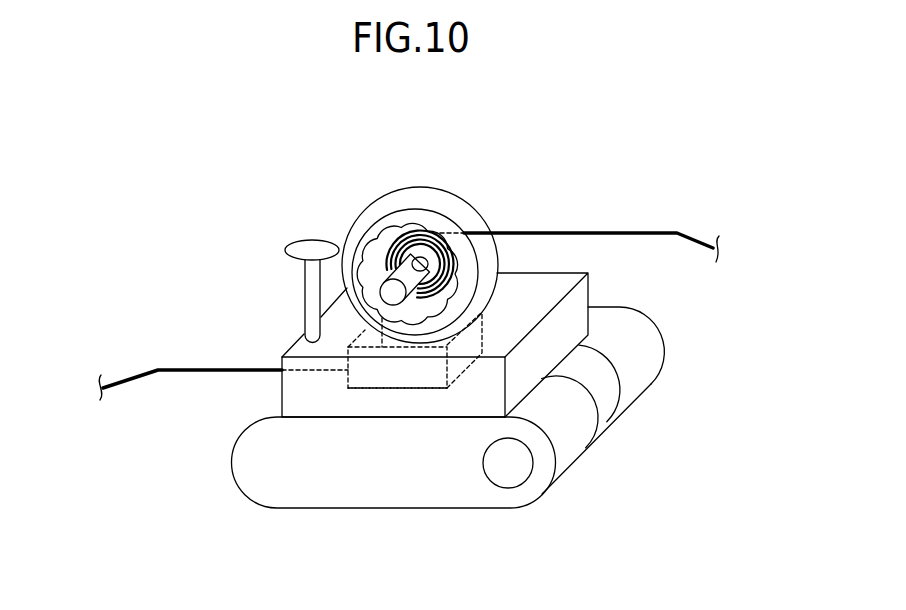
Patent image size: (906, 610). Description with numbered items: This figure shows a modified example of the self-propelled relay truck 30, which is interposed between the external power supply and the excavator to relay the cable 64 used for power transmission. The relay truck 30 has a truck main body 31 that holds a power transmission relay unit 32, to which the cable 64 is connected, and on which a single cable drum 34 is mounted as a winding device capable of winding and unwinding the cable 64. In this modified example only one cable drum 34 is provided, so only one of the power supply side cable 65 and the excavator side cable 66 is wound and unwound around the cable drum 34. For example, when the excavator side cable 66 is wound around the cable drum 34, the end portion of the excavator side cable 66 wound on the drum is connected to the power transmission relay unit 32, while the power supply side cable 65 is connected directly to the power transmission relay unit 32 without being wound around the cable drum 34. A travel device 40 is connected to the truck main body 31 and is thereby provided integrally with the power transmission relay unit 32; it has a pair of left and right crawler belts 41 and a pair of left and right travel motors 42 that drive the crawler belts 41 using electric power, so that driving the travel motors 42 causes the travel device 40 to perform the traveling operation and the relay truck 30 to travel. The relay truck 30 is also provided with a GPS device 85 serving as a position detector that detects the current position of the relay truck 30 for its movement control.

The relay truck 30 is at (363, 349).
The truck main body 31 is at (290, 348).
The power transmission relay unit 32 is at (372, 388).
The cable drum 34 is at (428, 188).
The travel device 40 is at (448, 428).
The crawler belts 41 is at (568, 455).
The travel motors 42 is at (507, 489).
The cable 64 is at (409, 296).
The power supply side cable 65 is at (143, 372).
The excavator side cable 66 is at (647, 232).
The GPS device 85 is at (290, 254).